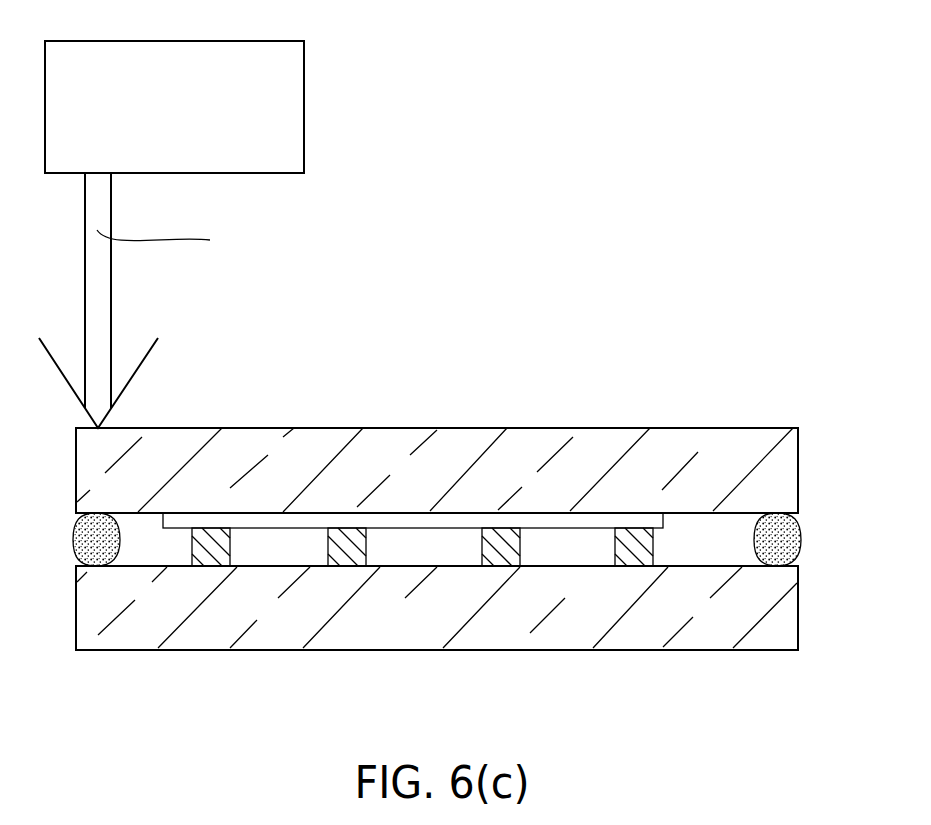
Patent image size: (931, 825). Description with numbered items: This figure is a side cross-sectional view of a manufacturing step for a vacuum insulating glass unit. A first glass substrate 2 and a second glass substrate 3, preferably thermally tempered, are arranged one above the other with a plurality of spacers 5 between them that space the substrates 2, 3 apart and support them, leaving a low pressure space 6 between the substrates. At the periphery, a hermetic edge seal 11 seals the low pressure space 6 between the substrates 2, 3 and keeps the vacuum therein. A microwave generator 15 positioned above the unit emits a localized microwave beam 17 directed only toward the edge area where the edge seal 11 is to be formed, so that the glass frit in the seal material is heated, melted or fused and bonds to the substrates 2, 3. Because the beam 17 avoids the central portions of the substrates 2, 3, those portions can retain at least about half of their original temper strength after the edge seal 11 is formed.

The first glass substrate 2 is at (703, 635).
The second glass substrate 3 is at (603, 457).
The spacers 5 is at (225, 547).
The low pressure space 6 is at (418, 555).
The edge seal 11 is at (83, 543).
The microwave generator 15 is at (304, 97).
The microwave beam 17 is at (100, 308).